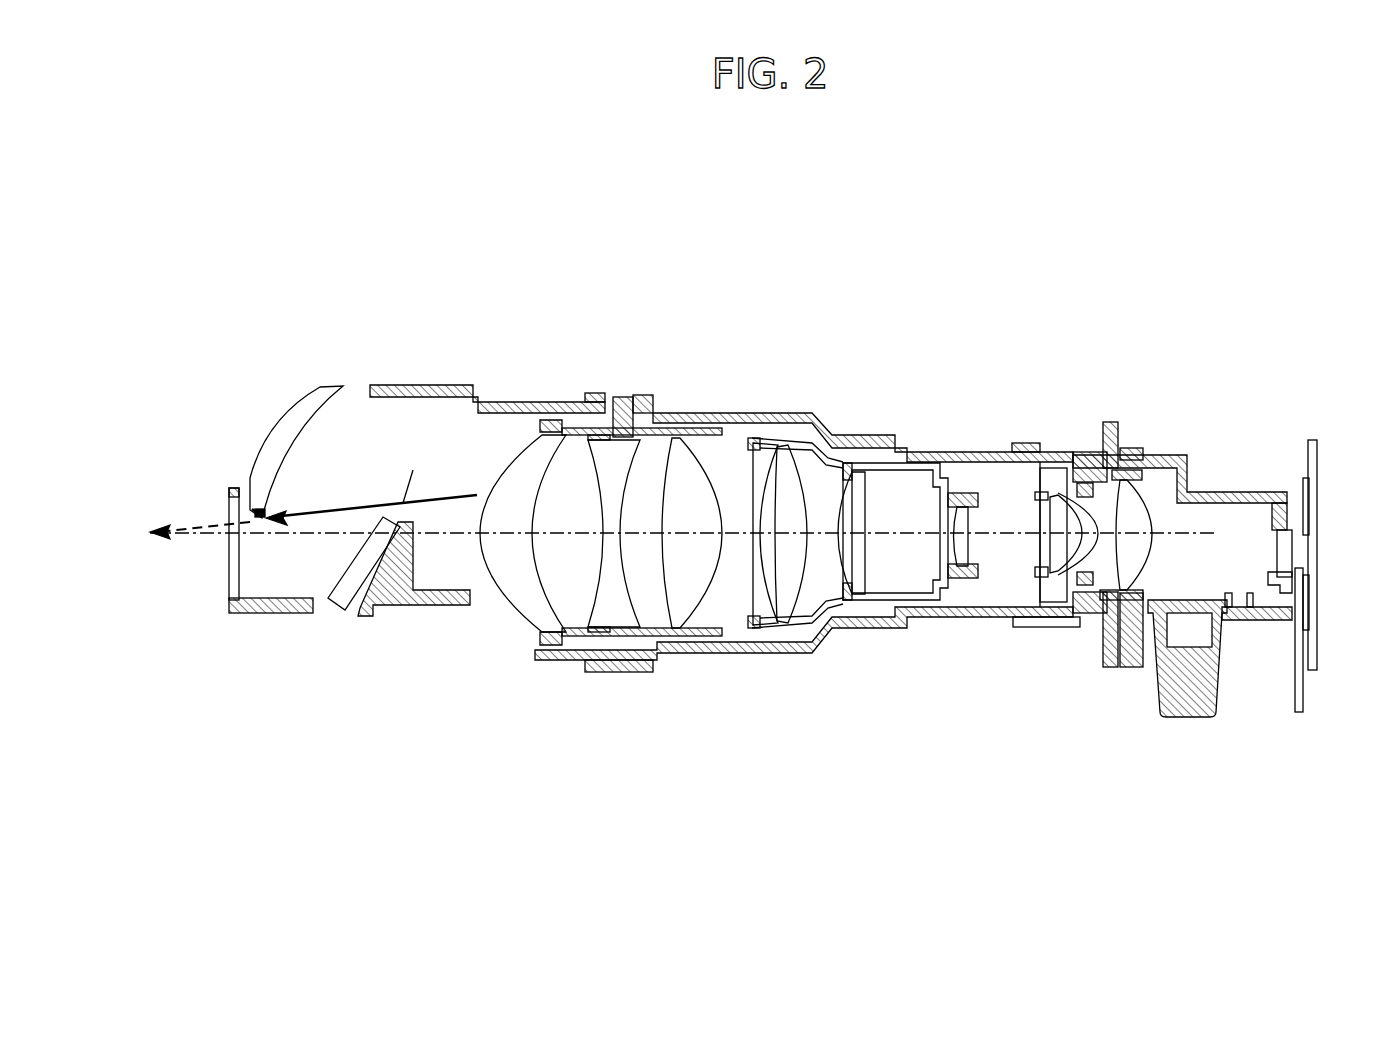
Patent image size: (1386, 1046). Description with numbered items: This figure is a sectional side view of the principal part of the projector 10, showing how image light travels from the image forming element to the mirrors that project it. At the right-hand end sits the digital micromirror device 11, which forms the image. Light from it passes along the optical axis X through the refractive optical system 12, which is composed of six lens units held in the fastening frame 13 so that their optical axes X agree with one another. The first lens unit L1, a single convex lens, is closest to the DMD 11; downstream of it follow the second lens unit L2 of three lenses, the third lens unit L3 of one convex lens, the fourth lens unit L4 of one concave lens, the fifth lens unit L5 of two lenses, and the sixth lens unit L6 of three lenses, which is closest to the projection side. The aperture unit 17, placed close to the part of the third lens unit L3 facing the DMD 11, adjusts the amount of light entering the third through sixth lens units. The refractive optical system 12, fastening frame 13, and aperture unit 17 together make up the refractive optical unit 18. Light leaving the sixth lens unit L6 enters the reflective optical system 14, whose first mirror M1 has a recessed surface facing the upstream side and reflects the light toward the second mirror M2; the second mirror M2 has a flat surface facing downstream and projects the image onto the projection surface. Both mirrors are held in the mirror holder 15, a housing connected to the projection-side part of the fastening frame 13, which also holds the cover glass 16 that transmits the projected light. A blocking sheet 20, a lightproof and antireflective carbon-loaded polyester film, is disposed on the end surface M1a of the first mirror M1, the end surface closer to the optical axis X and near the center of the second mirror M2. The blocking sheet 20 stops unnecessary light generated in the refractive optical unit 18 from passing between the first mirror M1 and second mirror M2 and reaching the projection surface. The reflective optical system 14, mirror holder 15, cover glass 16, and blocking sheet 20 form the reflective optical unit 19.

The projector 10 is at (996, 314).
The digital micromirror device 11 is at (1280, 555).
The refractive optical system 12 is at (1113, 748).
The fastening frame 13 is at (884, 633).
The reflective optical system 14 is at (392, 693).
The mirror holder 15 is at (409, 605).
The cover glass 16 is at (233, 506).
The aperture unit 17 is at (964, 648).
The refractive optical unit 18 is at (810, 813).
The reflective optical unit 19 is at (492, 745).
The blocking sheet 20 is at (270, 519).
The first lens unit L1 is at (1135, 550).
The second lens unit L2 is at (1056, 585).
The third lens unit L3 is at (965, 552).
The fourth lens unit L4 is at (848, 605).
The fifth lens unit L5 is at (774, 628).
The sixth lens unit L6 is at (715, 677).
The first mirror M1 is at (310, 411).
The end surface M1a is at (257, 507).
The second mirror M2 is at (353, 578).
The optical axis X is at (997, 533).